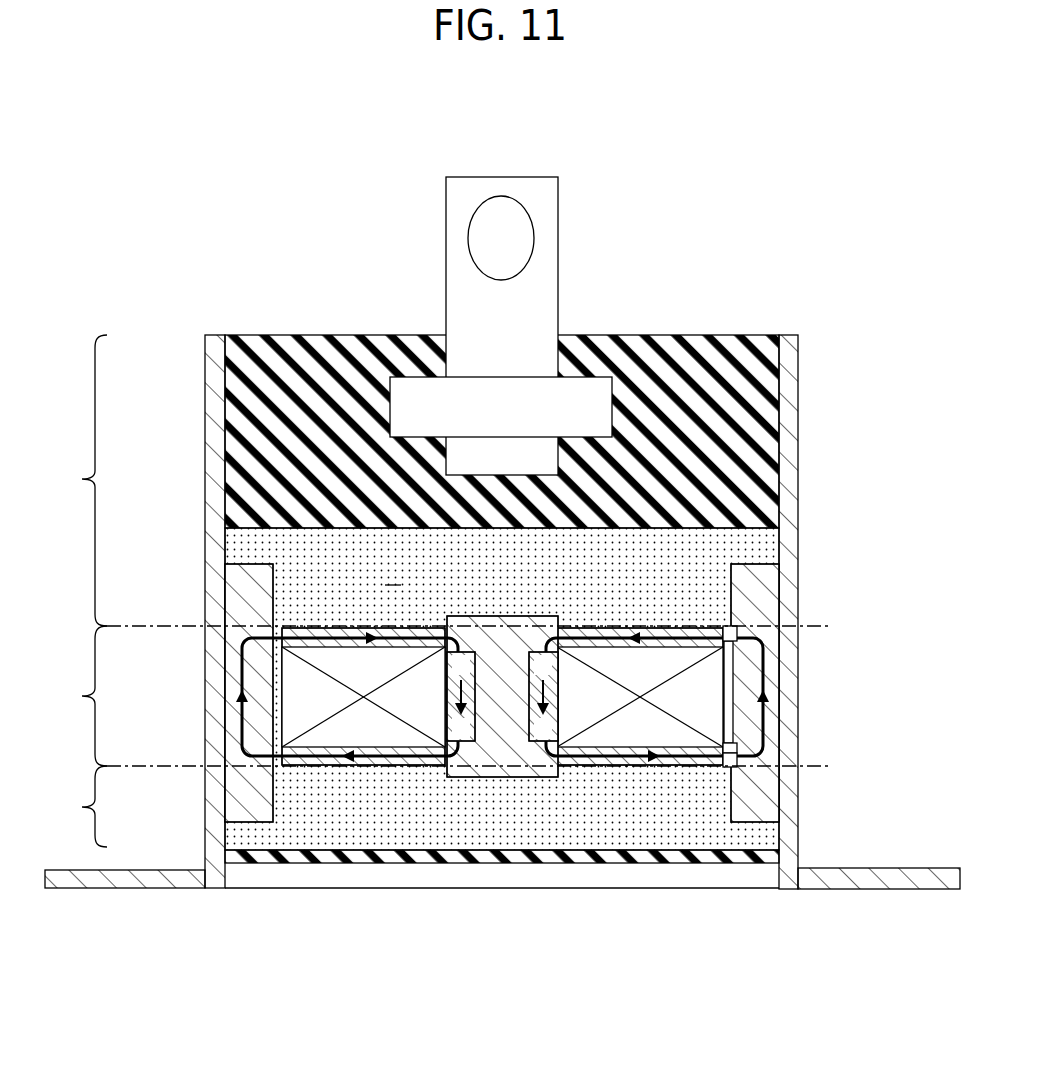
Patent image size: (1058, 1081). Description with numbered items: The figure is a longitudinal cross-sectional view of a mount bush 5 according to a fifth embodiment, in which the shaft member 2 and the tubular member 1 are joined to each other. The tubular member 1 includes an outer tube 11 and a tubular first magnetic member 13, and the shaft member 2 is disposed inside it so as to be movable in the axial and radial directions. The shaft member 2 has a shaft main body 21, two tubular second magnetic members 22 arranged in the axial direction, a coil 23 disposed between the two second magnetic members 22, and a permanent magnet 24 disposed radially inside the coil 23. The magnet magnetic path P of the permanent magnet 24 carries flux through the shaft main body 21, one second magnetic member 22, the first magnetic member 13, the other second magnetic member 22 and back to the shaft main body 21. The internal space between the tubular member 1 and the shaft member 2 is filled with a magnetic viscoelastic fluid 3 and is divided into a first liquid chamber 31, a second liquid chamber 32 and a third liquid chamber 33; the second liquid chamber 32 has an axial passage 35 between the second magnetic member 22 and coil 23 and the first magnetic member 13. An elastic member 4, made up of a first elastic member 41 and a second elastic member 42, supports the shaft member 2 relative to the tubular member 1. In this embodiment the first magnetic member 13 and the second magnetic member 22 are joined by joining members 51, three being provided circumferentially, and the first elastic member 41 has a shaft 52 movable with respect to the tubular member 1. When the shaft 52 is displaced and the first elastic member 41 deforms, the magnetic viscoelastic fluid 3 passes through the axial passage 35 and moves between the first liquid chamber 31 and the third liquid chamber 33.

The tubular member 1 is at (206, 322).
The shaft member 2 is at (548, 783).
The magnetic viscoelastic fluid 3 is at (672, 565).
The elastic member 4 is at (545, 601).
The mount bush 5 is at (585, 286).
The outer tube 11 is at (884, 868).
The first magnetic member 13 is at (770, 589).
The shaft main body 21 is at (523, 763).
The second magnetic member 22 is at (315, 762).
The coil 23 is at (386, 737).
The permanent magnet 24 is at (484, 728).
The first liquid chamber 31 is at (42, 497).
The second liquid chamber 32 is at (42, 710).
The third liquid chamber 33 is at (42, 821).
The axial passage 35 is at (730, 648).
The first elastic member 41 is at (752, 340).
The second elastic member 42 is at (727, 863).
The joining member 51 is at (730, 748).
The shaft 52 is at (436, 168).
The magnet magnetic path P is at (765, 684).